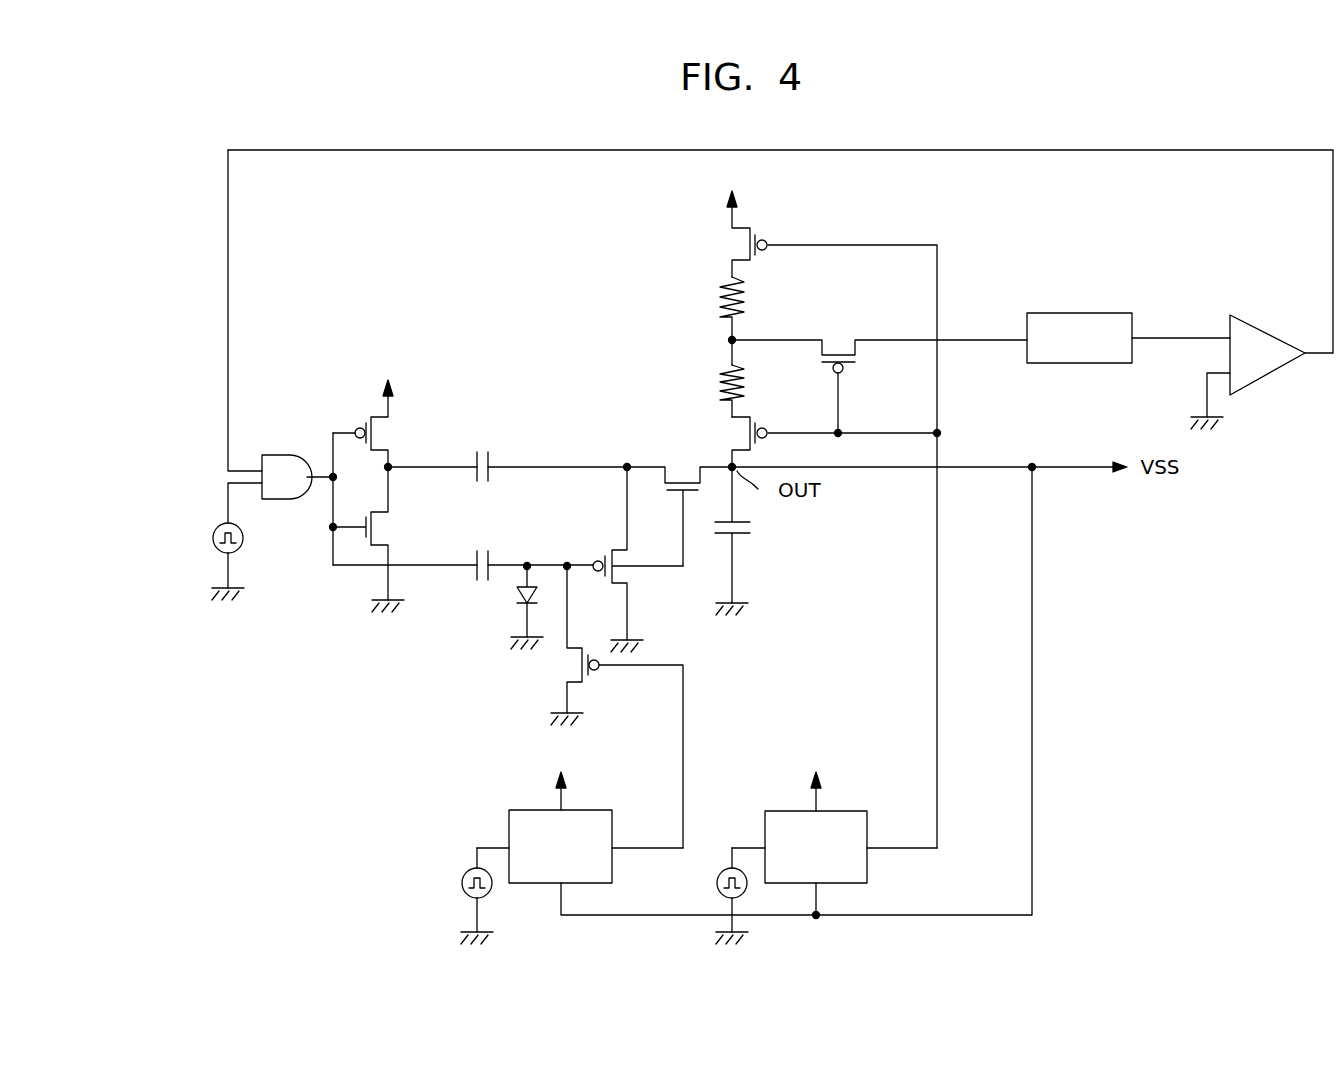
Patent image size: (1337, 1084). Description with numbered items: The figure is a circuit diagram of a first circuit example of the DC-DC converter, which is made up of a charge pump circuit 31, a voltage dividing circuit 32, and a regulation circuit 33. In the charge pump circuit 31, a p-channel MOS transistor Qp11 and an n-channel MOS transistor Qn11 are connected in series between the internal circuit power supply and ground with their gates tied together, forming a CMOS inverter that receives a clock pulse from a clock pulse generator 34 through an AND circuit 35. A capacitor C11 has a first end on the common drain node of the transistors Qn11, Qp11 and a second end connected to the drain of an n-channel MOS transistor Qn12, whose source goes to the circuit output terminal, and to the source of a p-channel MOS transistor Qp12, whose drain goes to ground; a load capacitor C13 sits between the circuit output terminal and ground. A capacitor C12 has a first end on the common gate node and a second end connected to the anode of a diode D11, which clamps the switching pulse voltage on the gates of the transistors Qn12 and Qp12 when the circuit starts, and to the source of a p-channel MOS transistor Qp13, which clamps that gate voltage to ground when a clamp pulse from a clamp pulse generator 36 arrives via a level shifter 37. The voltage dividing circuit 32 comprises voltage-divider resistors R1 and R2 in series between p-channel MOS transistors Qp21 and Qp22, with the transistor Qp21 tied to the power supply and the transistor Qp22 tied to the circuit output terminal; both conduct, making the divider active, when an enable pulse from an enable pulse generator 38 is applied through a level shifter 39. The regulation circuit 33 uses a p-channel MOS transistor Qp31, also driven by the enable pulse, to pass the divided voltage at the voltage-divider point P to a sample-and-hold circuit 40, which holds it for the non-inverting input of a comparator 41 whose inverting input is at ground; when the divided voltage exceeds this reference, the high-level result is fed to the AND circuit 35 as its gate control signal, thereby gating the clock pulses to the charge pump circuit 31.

The charge pump circuit 31 is at (433, 600).
The voltage dividing circuit 32 is at (750, 316).
The regulation circuit 33 is at (871, 508).
The clock pulse generator 34 is at (212, 540).
The AND circuit 35 is at (276, 457).
The clamp pulse generator 36 is at (462, 883).
The level shifter 37 is at (612, 815).
The enable pulse generator 38 is at (717, 883).
The level shifter 39 is at (867, 815).
The sample-and-hold circuit 40 is at (1105, 313).
The comparator 41 is at (1267, 373).
The p-channel MOS transistor Qp11 is at (378, 434).
The n-channel MOS transistor Qn11 is at (378, 528).
The capacitor C11 is at (481, 446).
The capacitor C12 is at (481, 543).
The diode D11 is at (515, 592).
The p-channel MOS transistor Qp12 is at (623, 573).
The n-channel MOS transistor Qn12 is at (681, 473).
The p-channel MOS transistor Qp13 is at (576, 666).
The p-channel MOS transistor Qp21 is at (736, 246).
The voltage-divider resistor R1 is at (721, 293).
The voltage-divider point P is at (726, 340).
The voltage-divider resistor R2 is at (752, 380).
The p-channel MOS transistor Qp22 is at (740, 425).
The p-channel MOS transistor Qp31 is at (838, 346).
The load capacitor C13 is at (755, 528).